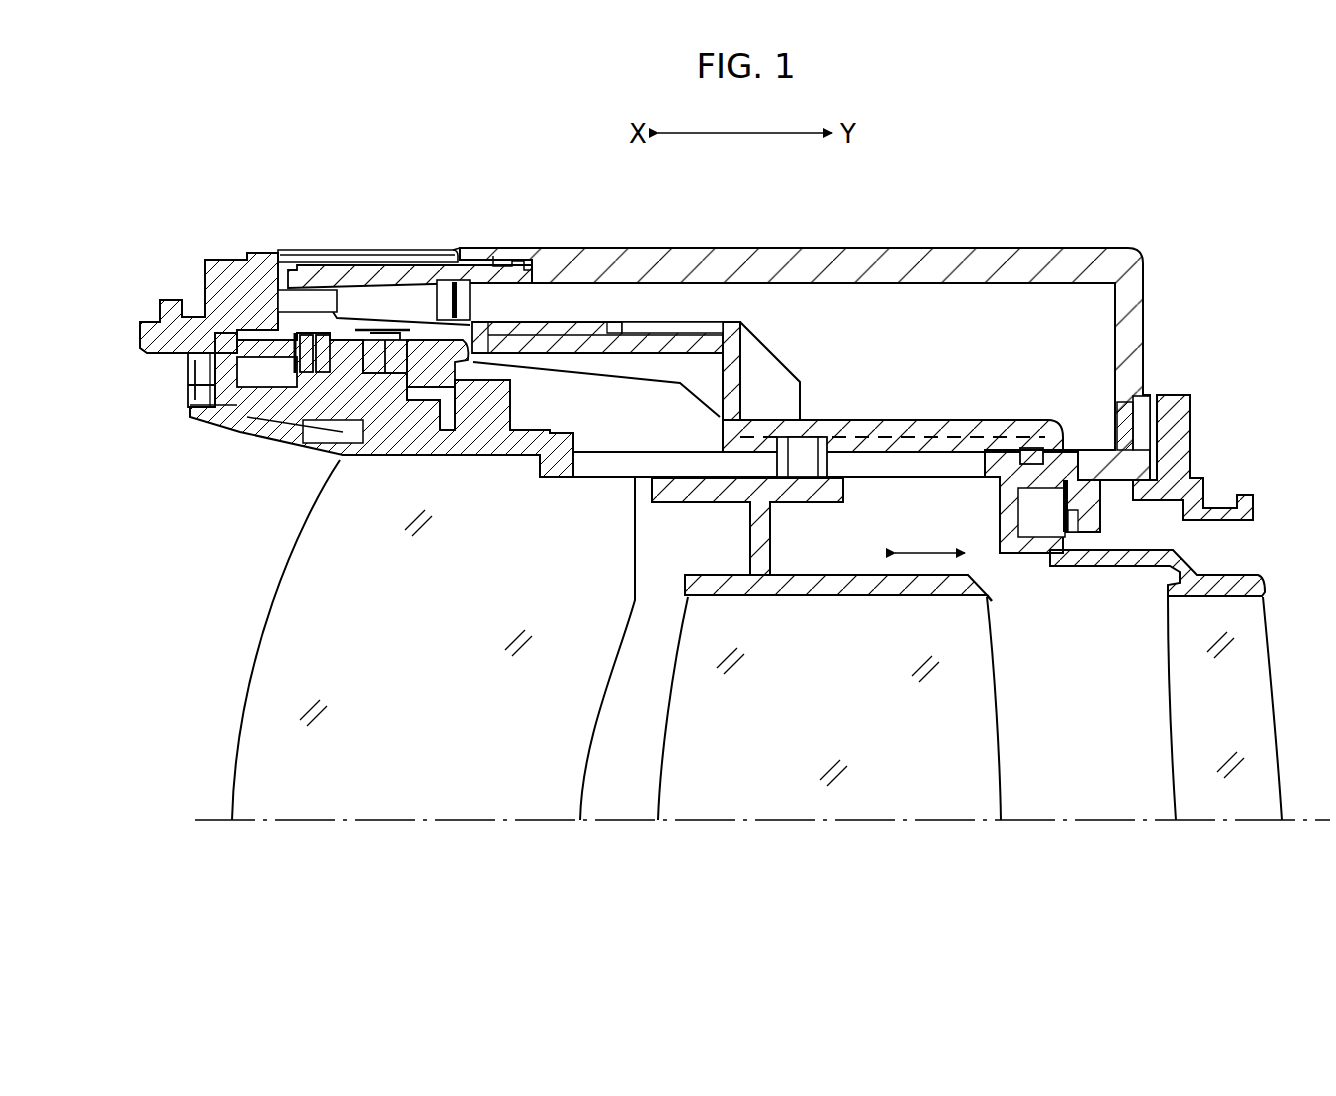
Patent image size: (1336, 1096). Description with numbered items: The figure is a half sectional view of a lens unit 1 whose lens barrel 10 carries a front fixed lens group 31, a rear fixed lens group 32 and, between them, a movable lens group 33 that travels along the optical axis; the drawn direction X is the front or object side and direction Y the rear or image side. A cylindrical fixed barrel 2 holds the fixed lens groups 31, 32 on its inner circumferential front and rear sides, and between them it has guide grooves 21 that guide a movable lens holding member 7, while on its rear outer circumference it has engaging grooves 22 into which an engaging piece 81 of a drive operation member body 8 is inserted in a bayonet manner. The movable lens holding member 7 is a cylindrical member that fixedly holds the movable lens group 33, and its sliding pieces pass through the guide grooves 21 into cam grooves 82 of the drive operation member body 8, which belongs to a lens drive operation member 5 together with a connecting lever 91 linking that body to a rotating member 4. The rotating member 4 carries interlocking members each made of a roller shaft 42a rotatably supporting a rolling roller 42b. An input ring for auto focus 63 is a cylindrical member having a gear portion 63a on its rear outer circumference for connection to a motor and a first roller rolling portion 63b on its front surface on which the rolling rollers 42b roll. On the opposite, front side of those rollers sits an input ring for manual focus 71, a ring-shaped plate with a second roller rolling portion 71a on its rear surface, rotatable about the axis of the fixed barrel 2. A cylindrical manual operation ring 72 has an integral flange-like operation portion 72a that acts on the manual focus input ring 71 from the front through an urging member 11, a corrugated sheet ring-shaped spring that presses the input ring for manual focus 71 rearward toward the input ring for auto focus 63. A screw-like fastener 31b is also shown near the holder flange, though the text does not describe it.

The lens unit 1 is at (1107, 228).
The fixed barrel 2 is at (657, 452).
The rotating member 4 is at (313, 457).
The lens drive operation member 5 is at (1000, 419).
The movable lens holding member 7 is at (760, 590).
The drive operation member body 8 is at (958, 420).
The lens barrel 10 is at (945, 247).
The urging member 11 is at (267, 251).
The guide grooves 21 is at (867, 468).
The engaging grooves 22 is at (1042, 450).
The fixed lens group 31 is at (400, 782).
The fixing screw 31b is at (807, 470).
The fixed lens group 32 is at (1237, 778).
The movable lens group 33 is at (845, 782).
The roller shaft 42a is at (392, 251).
The rolling roller 42b is at (358, 251).
The input ring for auto focus 63 is at (482, 251).
The gear portion 63a is at (530, 251).
The first roller rolling portion 63b is at (433, 251).
The input ring for manual focus 71 is at (290, 446).
The second roller rolling portion 71a is at (272, 441).
The manual operation ring 72 is at (327, 251).
The operation portion 72a is at (248, 431).
The engaging piece 81 is at (1033, 452).
The cam grooves 82 is at (827, 432).
The connecting lever 91 is at (692, 330).